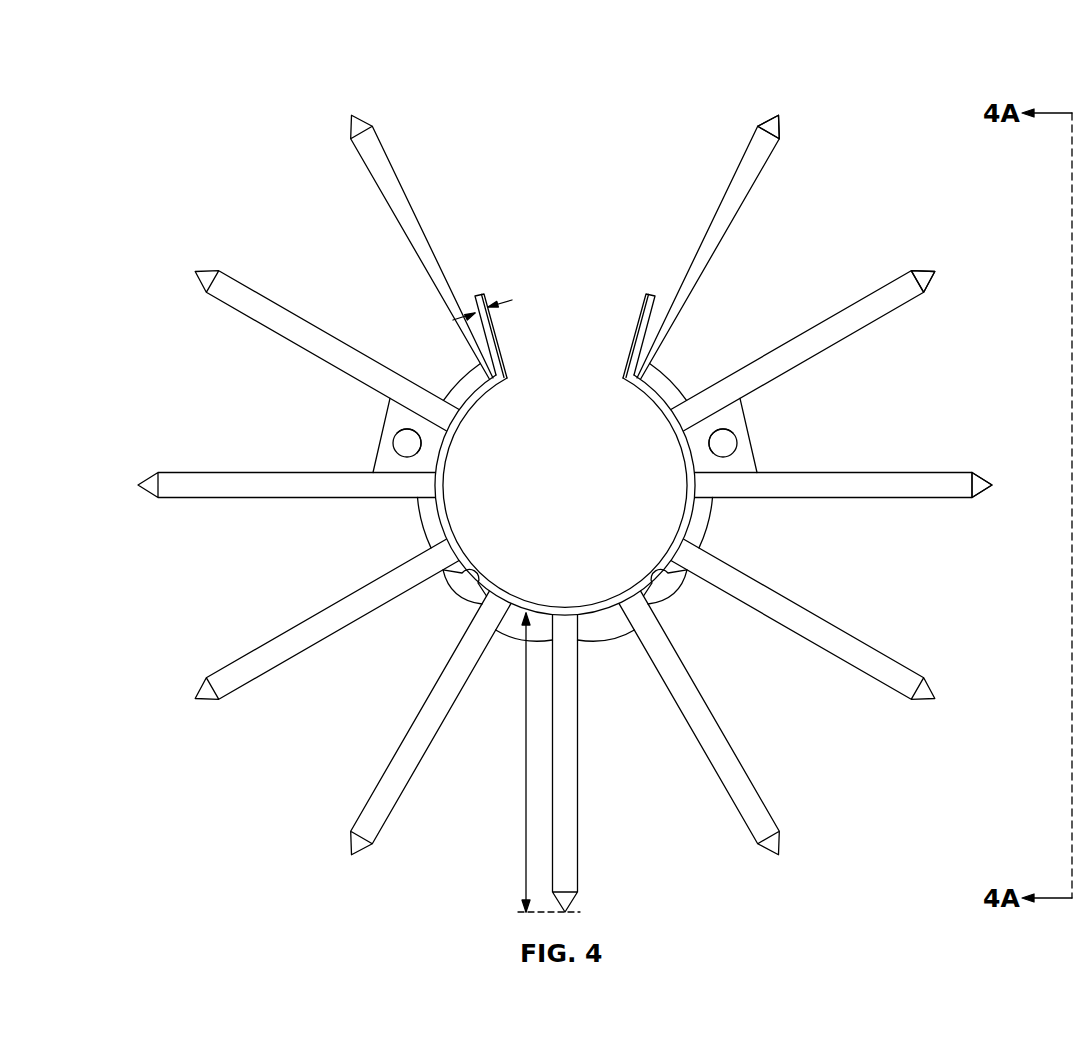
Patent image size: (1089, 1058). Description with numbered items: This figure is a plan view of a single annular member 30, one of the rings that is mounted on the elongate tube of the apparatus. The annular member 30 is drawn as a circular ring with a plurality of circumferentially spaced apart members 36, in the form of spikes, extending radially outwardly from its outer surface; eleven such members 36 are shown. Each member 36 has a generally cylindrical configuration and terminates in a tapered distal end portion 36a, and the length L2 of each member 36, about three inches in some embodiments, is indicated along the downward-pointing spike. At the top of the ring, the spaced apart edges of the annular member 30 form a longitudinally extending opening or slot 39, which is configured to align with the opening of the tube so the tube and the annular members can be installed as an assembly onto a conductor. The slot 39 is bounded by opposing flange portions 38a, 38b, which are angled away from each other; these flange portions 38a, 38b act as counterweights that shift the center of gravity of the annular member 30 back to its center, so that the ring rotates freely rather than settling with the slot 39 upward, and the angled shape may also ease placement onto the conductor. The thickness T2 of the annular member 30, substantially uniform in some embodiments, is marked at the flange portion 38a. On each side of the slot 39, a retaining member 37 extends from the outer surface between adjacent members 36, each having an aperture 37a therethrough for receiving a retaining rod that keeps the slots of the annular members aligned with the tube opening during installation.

The annular member 30 is at (927, 80).
The member 36 is at (402, 180).
The tapered distal end portion 36a is at (786, 127).
The retaining member 37 is at (748, 415).
The aperture 37a is at (735, 438).
The flange portion 38a is at (492, 330).
The flange portion 38b is at (646, 300).
The slot 39 is at (566, 405).
The length of member L2 is at (526, 826).
The thickness of annular member T2 is at (478, 298).